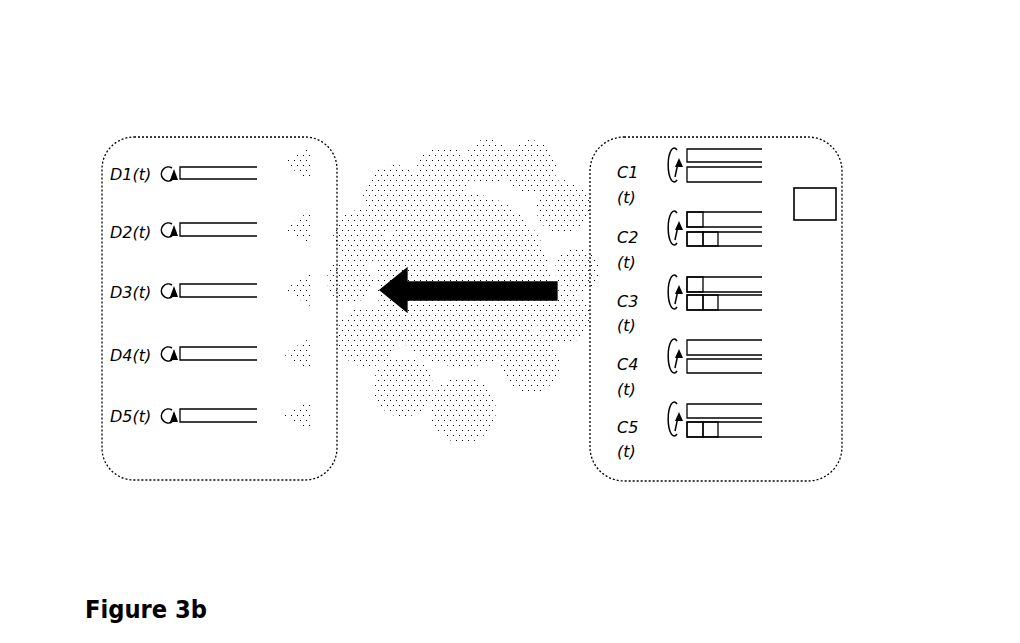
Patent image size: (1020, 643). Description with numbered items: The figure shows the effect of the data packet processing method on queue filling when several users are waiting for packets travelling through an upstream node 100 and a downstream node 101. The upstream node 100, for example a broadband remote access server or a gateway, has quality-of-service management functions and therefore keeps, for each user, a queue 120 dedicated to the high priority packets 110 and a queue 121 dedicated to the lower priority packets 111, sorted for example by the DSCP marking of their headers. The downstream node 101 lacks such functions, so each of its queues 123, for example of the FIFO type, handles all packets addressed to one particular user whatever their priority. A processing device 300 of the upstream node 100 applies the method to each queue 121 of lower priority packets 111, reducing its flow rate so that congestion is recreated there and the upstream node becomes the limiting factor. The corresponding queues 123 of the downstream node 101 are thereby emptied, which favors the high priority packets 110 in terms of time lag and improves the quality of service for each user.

The upstream node 100 is at (730, 137).
The downstream node 101 is at (292, 138).
The high priority packets 110 is at (692, 212).
The lower priority packets 111 is at (708, 437).
The queue dedicated to high priority packets 120 is at (682, 413).
The queue dedicated to lower priority packets 121 is at (683, 428).
The queue 123 is at (165, 415).
The processing device 300 is at (822, 188).